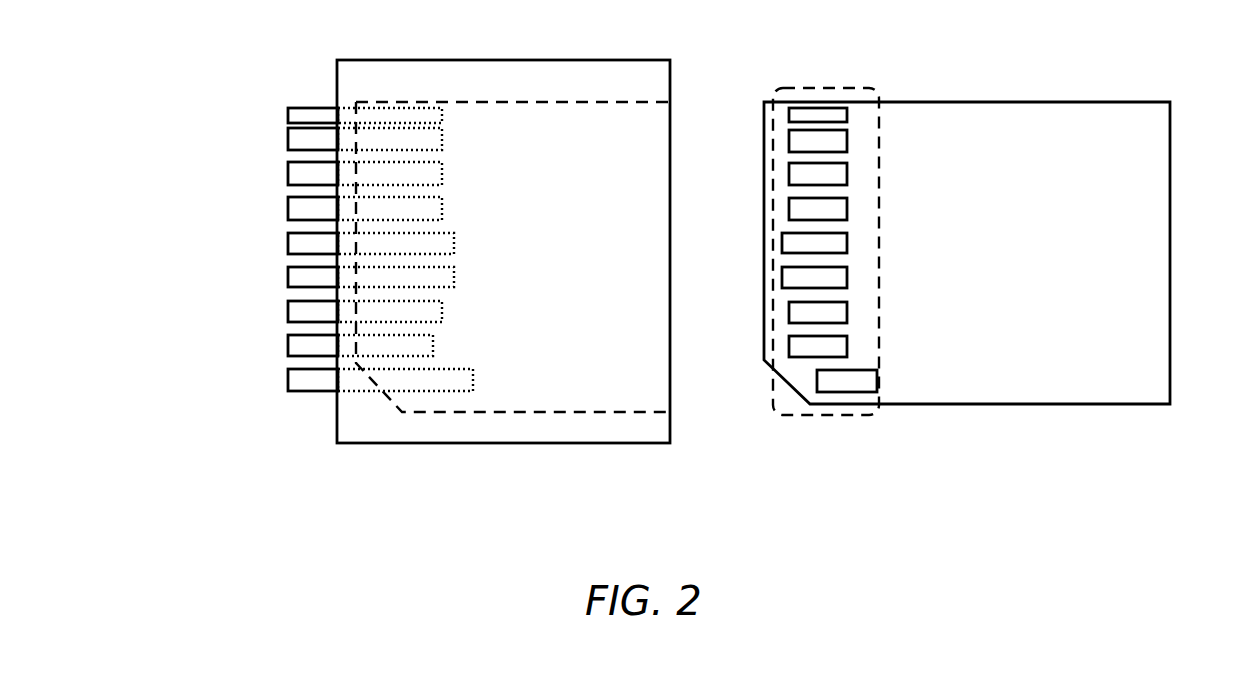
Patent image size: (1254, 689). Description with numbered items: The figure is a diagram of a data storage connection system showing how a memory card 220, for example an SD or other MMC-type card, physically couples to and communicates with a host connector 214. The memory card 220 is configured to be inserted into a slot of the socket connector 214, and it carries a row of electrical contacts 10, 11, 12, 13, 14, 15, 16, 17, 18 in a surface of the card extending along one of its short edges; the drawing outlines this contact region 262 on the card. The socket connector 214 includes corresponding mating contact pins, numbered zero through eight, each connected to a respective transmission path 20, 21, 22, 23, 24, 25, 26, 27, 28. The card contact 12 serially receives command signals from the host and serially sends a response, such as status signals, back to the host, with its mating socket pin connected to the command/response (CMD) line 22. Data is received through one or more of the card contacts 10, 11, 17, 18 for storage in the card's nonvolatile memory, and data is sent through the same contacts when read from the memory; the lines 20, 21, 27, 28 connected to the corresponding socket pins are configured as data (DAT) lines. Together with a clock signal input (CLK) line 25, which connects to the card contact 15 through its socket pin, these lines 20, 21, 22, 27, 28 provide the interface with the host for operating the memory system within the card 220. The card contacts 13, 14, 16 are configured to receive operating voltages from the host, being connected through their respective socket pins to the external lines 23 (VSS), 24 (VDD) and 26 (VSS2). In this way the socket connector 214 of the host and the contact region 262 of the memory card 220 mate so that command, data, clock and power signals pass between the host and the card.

The host connector 214 is at (397, 50).
The memory card 220 is at (1040, 95).
The contact pad region 262 is at (819, 88).
The card contact 10 is at (879, 384).
The card contact 11 is at (850, 350).
The card contact 12 is at (850, 316).
The card contact 13 is at (850, 281).
The card contact 14 is at (850, 246).
The card contact 15 is at (850, 212).
The card contact 16 is at (850, 176).
The card contact 17 is at (850, 139).
The card contact 18 is at (852, 118).
The data line 20 is at (288, 383).
The data line 21 is at (288, 348).
The command/response line 22 is at (288, 313).
The VSS line 23 is at (288, 279).
The VDD line 24 is at (288, 245).
The clock signal input line 25 is at (288, 211).
The VSS2 line 26 is at (288, 175).
The data line 27 is at (288, 141).
The data line 28 is at (288, 112).